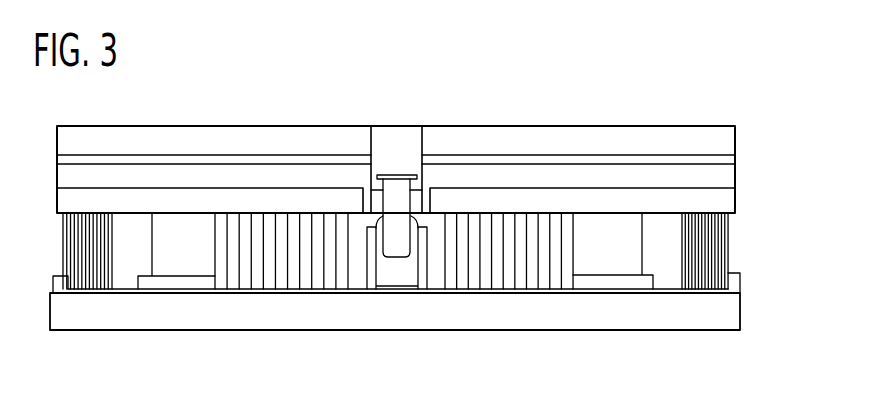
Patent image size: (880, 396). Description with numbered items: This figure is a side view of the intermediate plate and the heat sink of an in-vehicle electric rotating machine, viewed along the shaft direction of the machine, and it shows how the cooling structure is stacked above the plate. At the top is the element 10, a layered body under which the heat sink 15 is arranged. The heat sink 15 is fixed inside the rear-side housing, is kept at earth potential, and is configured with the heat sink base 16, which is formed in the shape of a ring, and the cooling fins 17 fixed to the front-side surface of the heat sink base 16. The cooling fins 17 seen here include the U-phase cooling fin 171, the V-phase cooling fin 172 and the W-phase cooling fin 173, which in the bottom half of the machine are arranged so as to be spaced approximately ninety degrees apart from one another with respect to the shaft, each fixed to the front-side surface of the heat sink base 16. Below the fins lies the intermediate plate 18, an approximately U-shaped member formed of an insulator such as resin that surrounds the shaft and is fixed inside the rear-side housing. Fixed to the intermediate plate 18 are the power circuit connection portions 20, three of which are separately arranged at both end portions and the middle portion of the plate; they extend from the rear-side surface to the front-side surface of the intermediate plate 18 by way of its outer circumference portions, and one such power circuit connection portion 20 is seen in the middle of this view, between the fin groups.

The semiconductor module (heat generating body) 10 is at (562, 176).
The heat sink 15 is at (449, 274).
The heat sink base 16 is at (698, 195).
The cooling fins 17 is at (425, 298).
The U-phase cooling fin 171 is at (93, 275).
The V-phase cooling fin 172 is at (297, 270).
The W-phase cooling fin 173 is at (693, 268).
The intermediate plate 18 is at (722, 313).
The power circuit connection portions 20 is at (395, 248).